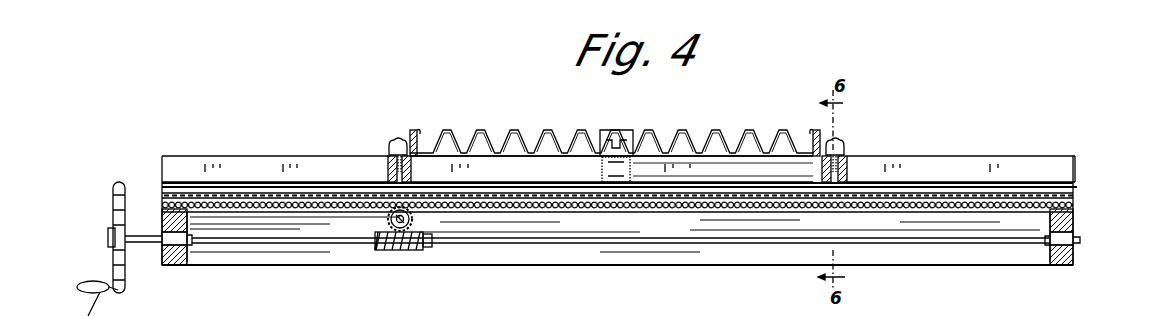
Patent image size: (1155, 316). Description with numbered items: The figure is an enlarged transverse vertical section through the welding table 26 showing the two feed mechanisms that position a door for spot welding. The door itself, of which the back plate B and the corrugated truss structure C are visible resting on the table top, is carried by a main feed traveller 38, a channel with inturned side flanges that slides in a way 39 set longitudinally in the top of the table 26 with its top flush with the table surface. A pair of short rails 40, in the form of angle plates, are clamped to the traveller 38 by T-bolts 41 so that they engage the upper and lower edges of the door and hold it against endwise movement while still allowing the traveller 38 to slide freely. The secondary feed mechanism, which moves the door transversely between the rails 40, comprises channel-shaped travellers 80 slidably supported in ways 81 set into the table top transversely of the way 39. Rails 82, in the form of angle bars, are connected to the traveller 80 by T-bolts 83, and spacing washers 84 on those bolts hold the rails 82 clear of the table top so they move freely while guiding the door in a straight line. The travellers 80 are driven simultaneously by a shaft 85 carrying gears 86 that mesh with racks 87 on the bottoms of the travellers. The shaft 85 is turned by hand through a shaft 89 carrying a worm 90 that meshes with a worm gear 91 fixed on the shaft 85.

The table 26 is at (213, 250).
The traveller 38 is at (633, 167).
The way 39 is at (562, 187).
The short rails 40 is at (602, 132).
The T-bolts 41 is at (618, 167).
The travellers 80 is at (1077, 187).
The ways 81 is at (1003, 170).
The rails 82 is at (412, 130).
The T-bolts 83 is at (397, 143).
The spacing washers 84 is at (392, 167).
The shaft 85 is at (420, 243).
The gears 86 is at (380, 248).
The racks 87 is at (378, 207).
The shaft 89 is at (150, 242).
The worm 90 is at (407, 248).
The worm gear 91 is at (400, 219).
The back plate B is at (543, 160).
The truss structure C is at (518, 131).